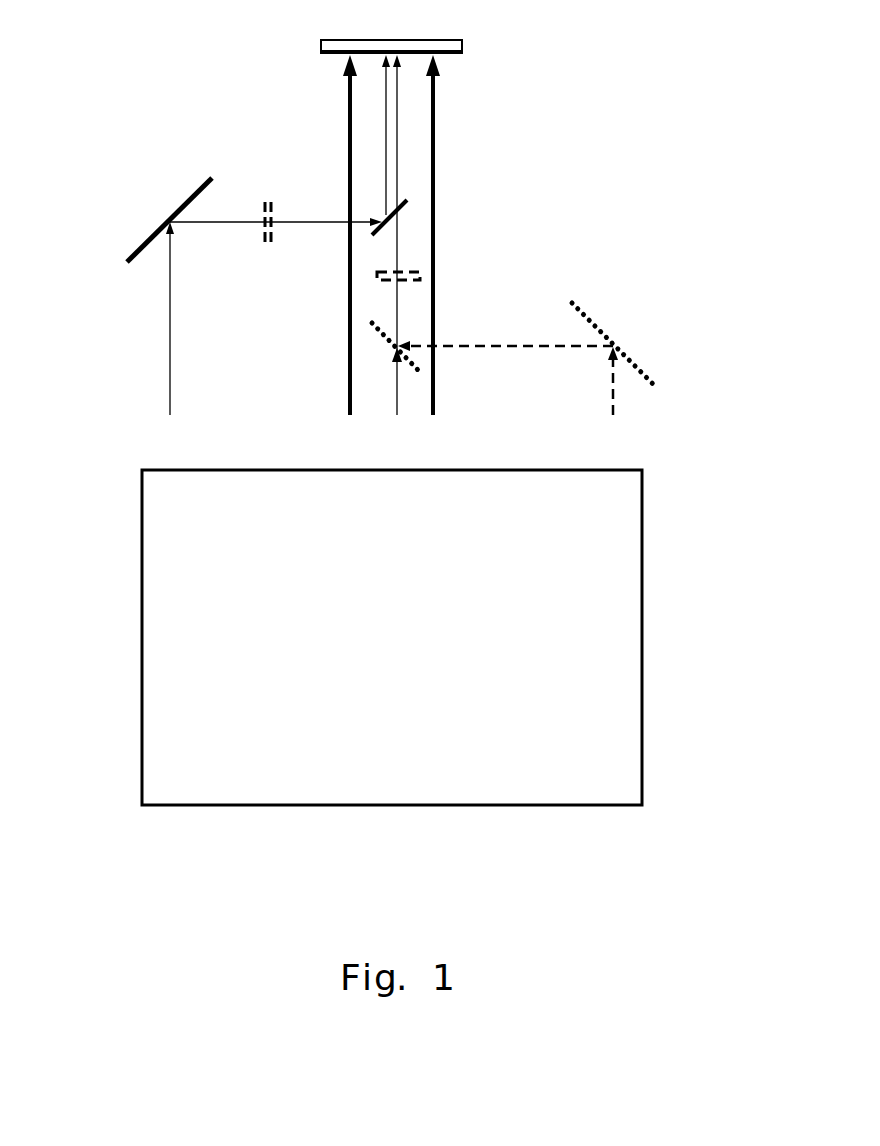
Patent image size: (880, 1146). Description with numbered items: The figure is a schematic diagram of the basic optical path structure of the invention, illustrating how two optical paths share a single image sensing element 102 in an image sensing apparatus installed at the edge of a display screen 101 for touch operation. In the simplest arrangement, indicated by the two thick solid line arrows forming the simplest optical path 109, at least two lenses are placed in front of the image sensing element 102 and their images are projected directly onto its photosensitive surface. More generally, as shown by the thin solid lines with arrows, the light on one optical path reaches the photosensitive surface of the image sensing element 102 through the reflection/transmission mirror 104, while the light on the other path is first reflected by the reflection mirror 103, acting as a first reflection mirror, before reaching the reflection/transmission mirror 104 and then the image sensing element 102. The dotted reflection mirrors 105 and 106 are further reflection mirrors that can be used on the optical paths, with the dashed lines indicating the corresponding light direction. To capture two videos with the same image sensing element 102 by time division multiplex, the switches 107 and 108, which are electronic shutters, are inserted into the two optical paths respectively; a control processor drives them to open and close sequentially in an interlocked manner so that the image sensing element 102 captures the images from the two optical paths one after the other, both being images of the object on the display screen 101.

The display screen for touch operation 101 is at (180, 637).
The image sensing element 102 is at (321, 47).
The reflection mirror 103 is at (150, 235).
The reflection/transmission mirror 104 is at (407, 202).
The reflection mirror 105 is at (372, 332).
The reflection mirror 106 is at (628, 359).
The switch on the optical path 107 is at (190, 185).
The switch on the optical path 108 is at (420, 277).
The simplest optical path 109 is at (352, 165).